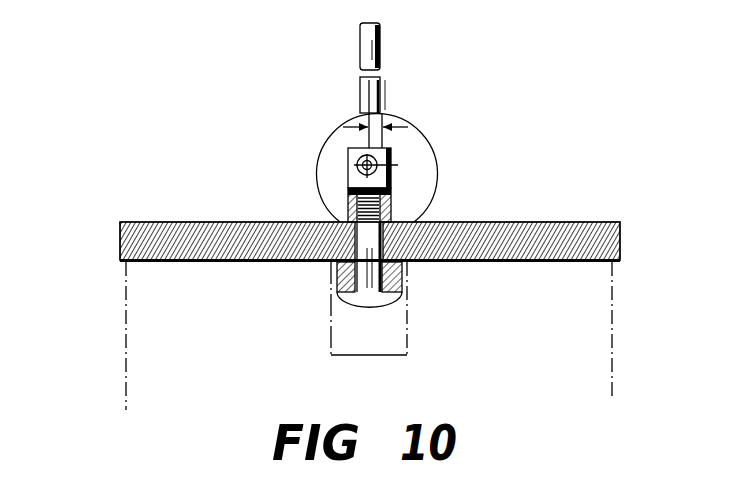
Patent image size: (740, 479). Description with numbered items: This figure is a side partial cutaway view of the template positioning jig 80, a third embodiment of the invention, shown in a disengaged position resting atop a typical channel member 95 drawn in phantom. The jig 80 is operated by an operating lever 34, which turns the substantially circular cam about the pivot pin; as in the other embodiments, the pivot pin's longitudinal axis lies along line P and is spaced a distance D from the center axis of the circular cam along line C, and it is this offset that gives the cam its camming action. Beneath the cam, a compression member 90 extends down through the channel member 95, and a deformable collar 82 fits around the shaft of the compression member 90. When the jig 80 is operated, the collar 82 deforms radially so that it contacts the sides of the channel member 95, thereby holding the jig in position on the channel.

The template positioning jig 80 is at (216, 81).
The operating lever 34 is at (362, 43).
The pivot pin longitudinal axis line P is at (366, 96).
The cam center axis line C is at (386, 92).
The spacing distance D is at (388, 122).
The deformable collar 82 is at (337, 272).
The compression member 90 is at (365, 290).
The channel member 95 is at (147, 328).